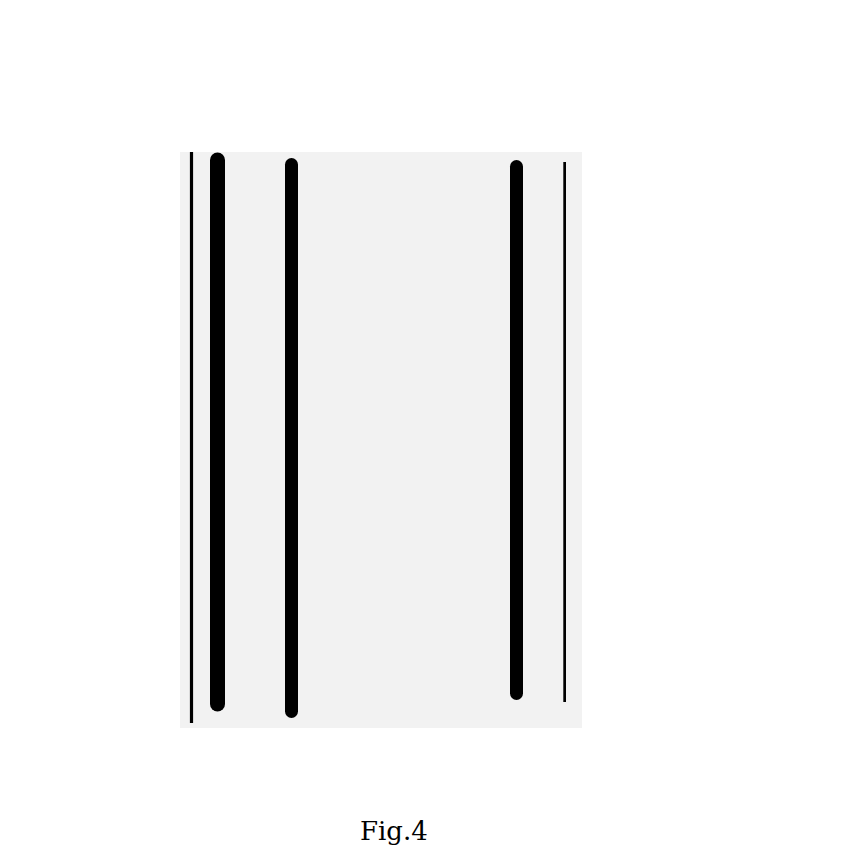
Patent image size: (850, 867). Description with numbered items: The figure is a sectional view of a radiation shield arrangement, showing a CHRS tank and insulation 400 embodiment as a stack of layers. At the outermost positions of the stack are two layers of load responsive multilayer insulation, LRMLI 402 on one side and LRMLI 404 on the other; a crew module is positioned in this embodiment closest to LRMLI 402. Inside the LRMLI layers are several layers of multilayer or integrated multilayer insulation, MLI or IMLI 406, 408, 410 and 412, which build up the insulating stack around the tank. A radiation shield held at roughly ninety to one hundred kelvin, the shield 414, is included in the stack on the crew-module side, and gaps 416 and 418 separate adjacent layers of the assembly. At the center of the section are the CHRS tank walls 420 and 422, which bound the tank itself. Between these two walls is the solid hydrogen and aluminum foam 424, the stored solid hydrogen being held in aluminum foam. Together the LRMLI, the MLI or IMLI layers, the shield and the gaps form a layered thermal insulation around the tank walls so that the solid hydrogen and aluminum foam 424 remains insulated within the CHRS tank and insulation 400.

The CHRS tank and insulation 400 is at (623, 406).
The LRMLI 402 is at (190, 175).
The LRMLI 404 is at (567, 178).
The MLI or IMLI 406 is at (200, 152).
The MLI or IMLI 408 is at (243, 150).
The MLI or IMLI 410 is at (273, 722).
The MLI or IMLI 412 is at (540, 156).
The 90-100 K shield 414 is at (217, 714).
The gap 416 is at (257, 724).
The gap 418 is at (561, 156).
The CHRS tank wall 420 is at (294, 153).
The CHRS tank wall 422 is at (516, 156).
The solid hydrogen and aluminum foam 424 is at (420, 150).